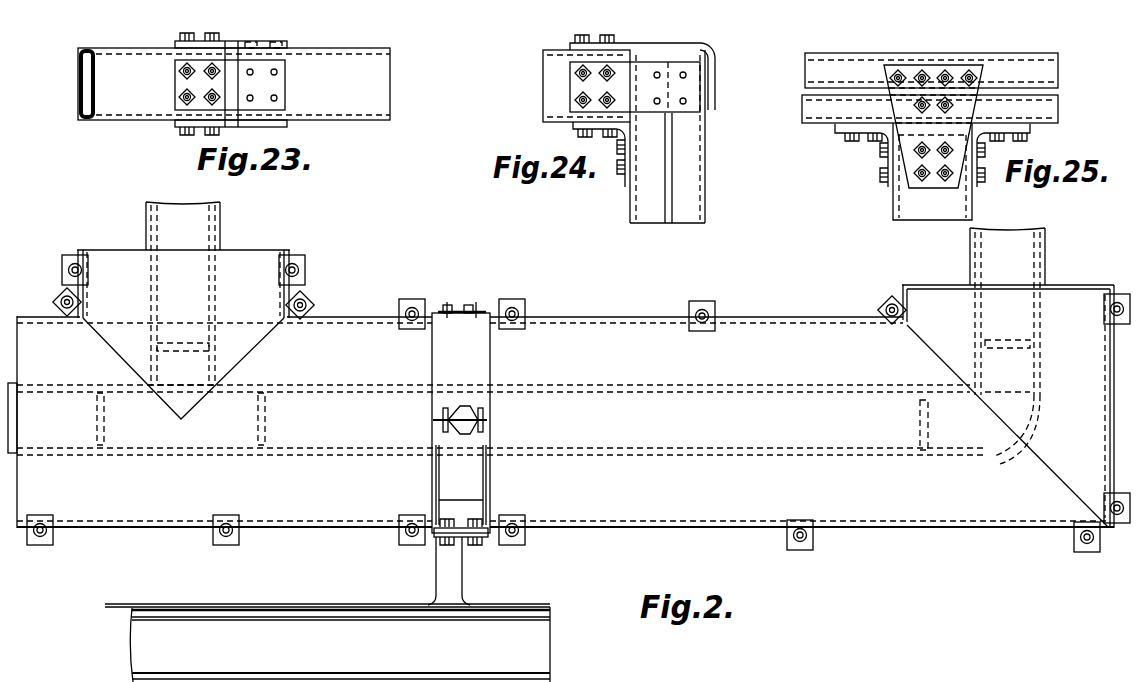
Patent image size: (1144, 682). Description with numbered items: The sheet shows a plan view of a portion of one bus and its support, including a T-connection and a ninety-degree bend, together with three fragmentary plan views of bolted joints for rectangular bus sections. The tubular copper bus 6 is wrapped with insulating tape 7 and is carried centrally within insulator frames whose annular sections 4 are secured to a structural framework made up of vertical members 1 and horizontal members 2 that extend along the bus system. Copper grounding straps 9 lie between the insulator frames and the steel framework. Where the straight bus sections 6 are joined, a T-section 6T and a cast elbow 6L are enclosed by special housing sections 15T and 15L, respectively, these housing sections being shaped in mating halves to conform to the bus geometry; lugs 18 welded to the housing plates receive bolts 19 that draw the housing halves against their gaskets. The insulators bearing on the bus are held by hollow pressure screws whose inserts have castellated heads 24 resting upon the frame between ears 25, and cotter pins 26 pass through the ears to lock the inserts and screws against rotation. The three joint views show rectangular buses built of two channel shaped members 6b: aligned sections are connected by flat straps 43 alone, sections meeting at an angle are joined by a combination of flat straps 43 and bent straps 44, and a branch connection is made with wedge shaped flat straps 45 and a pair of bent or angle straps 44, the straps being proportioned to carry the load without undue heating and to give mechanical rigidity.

In FIG. 2, the vertical member 1 is at (538, 645).
In FIG. 2, the horizontal member 2 is at (463, 572).
In FIG. 2, the annular section 4 is at (432, 367).
In FIG. 2, the bus 6 is at (222, 213).
In FIG. 2, the T-section 6T is at (179, 437).
In FIG. 2, the cast elbow 6L is at (995, 450).
In FIG. 23, the channel shaped member 6b is at (82, 87).
In FIG. 24, the channel shaped member 6b is at (543, 76).
In FIG. 25, the channel shaped member 6b is at (808, 78).
In FIG. 2, the insulating tape 7 is at (222, 235).
In FIG. 2, the copper strap 9 is at (433, 572).
In FIG. 2, the housing section 15T is at (327, 520).
In FIG. 2, the housing section 15L is at (933, 518).
In FIG. 2, the lug 18 is at (287, 280).
In FIG. 2, the bolt 19 is at (300, 306).
In FIG. 2, the castellated head 24 is at (462, 318).
In FIG. 2, the ear 25 is at (486, 308).
In FIG. 2, the cotter pin 26 is at (440, 312).
In FIG. 23, the flat strap 43 is at (263, 43).
In FIG. 24, the flat strap 43 is at (572, 90).
In FIG. 24, the bent strap 44 is at (668, 37).
In FIG. 25, the bent strap 44 is at (883, 142).
In FIG. 25, the wedge shaped flat strap 45 is at (912, 63).